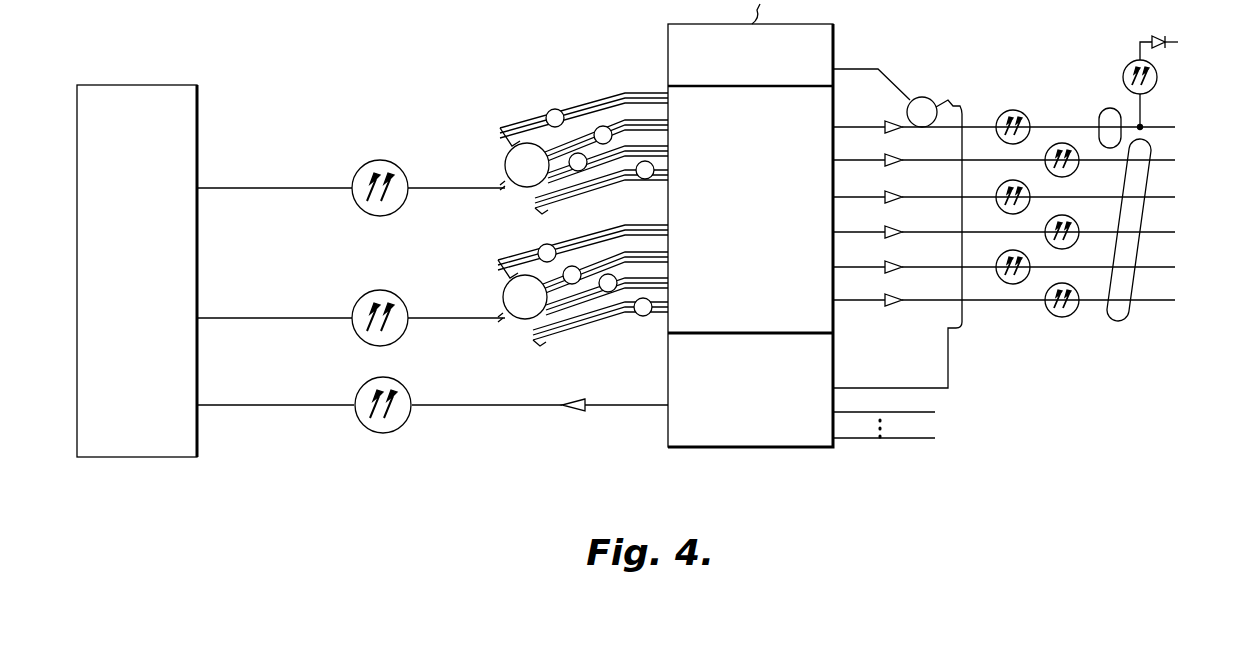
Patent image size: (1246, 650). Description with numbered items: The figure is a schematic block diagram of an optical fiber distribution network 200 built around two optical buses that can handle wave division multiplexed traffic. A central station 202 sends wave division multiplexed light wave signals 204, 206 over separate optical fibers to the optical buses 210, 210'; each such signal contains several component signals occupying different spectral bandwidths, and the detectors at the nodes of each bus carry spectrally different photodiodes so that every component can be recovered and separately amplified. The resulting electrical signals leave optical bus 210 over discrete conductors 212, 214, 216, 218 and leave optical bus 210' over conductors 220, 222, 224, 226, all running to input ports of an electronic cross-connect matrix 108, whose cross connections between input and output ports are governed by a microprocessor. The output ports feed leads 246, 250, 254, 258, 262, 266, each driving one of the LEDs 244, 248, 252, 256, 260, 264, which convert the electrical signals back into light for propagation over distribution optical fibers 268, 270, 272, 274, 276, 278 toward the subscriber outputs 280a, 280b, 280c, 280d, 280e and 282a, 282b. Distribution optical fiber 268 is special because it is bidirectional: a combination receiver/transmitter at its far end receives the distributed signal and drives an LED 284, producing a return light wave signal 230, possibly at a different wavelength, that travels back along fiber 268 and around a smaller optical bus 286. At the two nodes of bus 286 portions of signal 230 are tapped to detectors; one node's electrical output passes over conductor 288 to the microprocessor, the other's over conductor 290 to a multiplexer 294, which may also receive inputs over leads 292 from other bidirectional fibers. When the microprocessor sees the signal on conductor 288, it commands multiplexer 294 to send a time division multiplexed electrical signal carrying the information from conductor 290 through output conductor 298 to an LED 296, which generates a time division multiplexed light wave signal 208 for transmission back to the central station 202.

The optical fiber distribution network 200 is at (488, 416).
The central station 202 is at (130, 85).
The wave division multiplexed light wave signal 204 is at (252, 188).
The wave division multiplexed light wave signal 206 is at (252, 318).
The time division multiplexed light wave signal 208 is at (274, 405).
The optical bus 210 is at (560, 153).
The optical bus 210' is at (558, 285).
The conductor 212 is at (558, 109).
The conductor 214 is at (606, 126).
The conductor 216 is at (575, 171).
The conductor 218 is at (645, 179).
The conductor 220 is at (540, 250).
The conductor 222 is at (571, 284).
The conductor 224 is at (607, 292).
The conductor 226 is at (643, 316).
The electronic cross-connect matrix 108 is at (737, 257).
The light wave signal 230 is at (1140, 60).
The LED 244 is at (882, 127).
The output lead 246 is at (870, 160).
The LED 248 is at (903, 127).
The output lead 250 is at (846, 170).
The LED 252 is at (903, 160).
The output lead 254 is at (844, 205).
The LED 256 is at (903, 197).
The output lead 258 is at (846, 240).
The LED 260 is at (903, 232).
The output lead 262 is at (846, 275).
The LED 264 is at (903, 267).
The output lead 266 is at (855, 300).
The bidirectional distribution optical fiber 268 is at (1060, 126).
The distribution optical fiber 270 is at (1087, 160).
The distribution optical fiber 272 is at (1096, 197).
The distribution optical fiber 274 is at (1096, 232).
The distribution optical fiber 276 is at (1094, 267).
The distribution optical fiber 278 is at (1090, 302).
The output optical fiber 280a is at (1199, 160).
The output optical fiber 280b is at (1199, 197).
The output optical fiber 280c is at (1199, 232).
The output optical fiber 280d is at (1199, 267).
The output optical fiber 280e is at (1199, 300).
The output optical fiber 282a is at (1194, 42).
The output optical fiber 282b is at (1199, 127).
The LED 284 is at (1158, 33).
The smaller optical bus 286 is at (935, 98).
The conductor 288 is at (884, 68).
The conductor 290 is at (948, 350).
The leads 292 is at (935, 412).
The multiplexer 294 is at (737, 432).
The LED 296 is at (572, 411).
The output conductor 298 is at (627, 405).